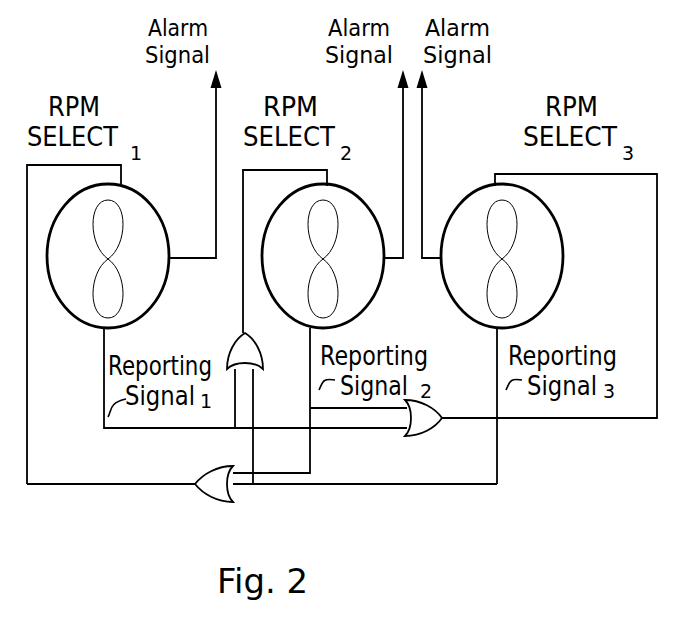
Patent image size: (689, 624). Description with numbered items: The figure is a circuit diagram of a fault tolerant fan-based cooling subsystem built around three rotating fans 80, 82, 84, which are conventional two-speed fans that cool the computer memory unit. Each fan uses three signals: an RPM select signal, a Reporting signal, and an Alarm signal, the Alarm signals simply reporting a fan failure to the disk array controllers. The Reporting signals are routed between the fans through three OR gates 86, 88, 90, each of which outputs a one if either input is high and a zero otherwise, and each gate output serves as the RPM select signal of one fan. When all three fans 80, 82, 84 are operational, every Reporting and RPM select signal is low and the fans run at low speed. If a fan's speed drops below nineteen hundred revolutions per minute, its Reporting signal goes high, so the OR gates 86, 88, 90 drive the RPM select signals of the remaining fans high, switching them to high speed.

The rotating fan 80 is at (63, 314).
The rotating fan 82 is at (283, 314).
The rotating fan 84 is at (442, 279).
The OR gate 86 is at (233, 340).
The OR gate 88 is at (423, 437).
The OR gate 90 is at (193, 473).